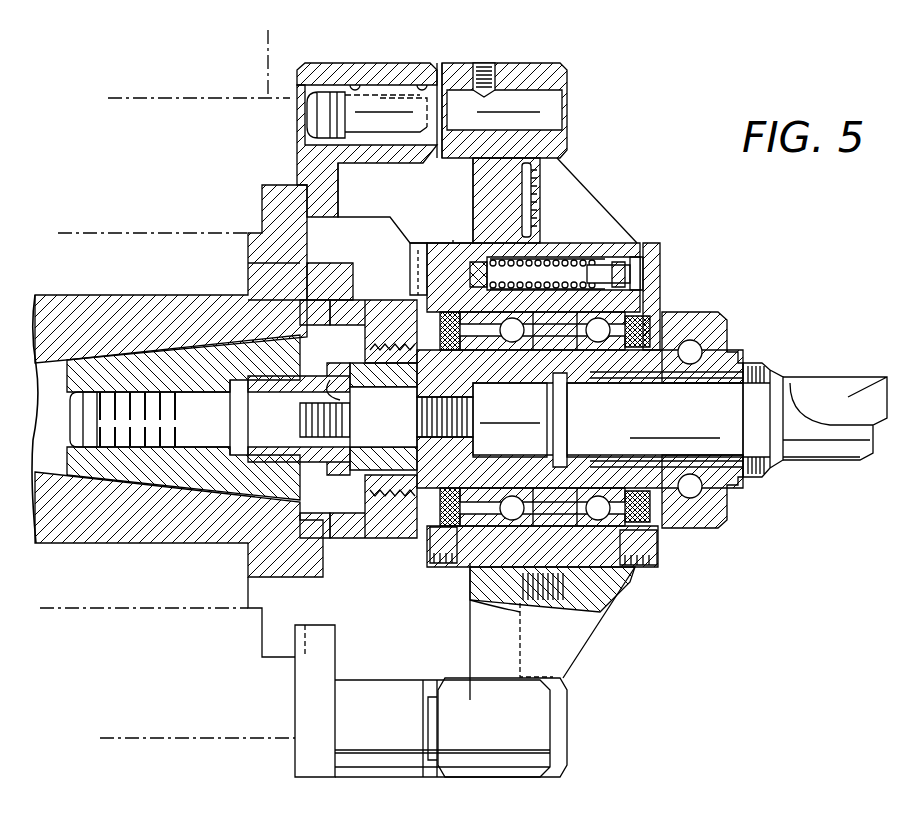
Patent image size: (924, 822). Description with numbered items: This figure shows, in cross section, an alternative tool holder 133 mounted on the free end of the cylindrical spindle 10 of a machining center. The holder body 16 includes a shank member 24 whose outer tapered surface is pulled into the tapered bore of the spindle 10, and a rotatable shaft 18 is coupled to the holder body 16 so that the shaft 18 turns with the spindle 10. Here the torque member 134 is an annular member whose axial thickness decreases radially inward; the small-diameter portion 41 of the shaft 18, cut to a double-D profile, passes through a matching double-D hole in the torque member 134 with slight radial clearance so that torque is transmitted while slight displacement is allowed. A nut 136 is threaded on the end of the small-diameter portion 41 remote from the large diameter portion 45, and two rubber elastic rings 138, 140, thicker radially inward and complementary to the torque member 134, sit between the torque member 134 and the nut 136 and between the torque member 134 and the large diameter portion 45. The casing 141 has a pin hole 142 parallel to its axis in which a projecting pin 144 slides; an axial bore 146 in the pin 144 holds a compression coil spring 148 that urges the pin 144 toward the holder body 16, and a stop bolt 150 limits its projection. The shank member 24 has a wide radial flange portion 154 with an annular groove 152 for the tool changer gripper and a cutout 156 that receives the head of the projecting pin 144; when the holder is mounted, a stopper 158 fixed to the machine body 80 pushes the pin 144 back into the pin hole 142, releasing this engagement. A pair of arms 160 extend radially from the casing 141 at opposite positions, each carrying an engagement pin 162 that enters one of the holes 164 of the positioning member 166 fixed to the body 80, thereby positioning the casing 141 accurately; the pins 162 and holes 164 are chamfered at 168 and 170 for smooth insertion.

The spindle 10 is at (66, 307).
The holder body 16 is at (184, 325).
The rotatable shaft 18 is at (602, 560).
The shank member 24 is at (128, 370).
The small-diameter portion 41 is at (380, 385).
The large diameter portion 45 is at (500, 572).
The body 80 is at (184, 176).
The tool holder 133 is at (614, 158).
The torque member 134 is at (392, 537).
The nut 136 is at (312, 455).
The elastic ring 138 is at (353, 470).
The elastic ring 140 is at (414, 530).
The casing 141 is at (603, 562).
The pin hole 142 is at (541, 262).
The projecting pin 144 is at (437, 250).
The axial bore 146 is at (560, 280).
The compression coil spring 148 is at (598, 278).
The stop bolt 150 is at (618, 270).
The annular groove 152 is at (382, 300).
The radial flange portion 154 is at (298, 300).
The cutout 156 is at (392, 283).
The stopper 158 is at (398, 228).
The arms 160 is at (538, 78).
The engagement pin 162 is at (388, 97).
The holes 164 is at (355, 84).
The positioning member 166 is at (305, 160).
The chamfer 168 is at (318, 93).
The chamfer 170 is at (440, 80).